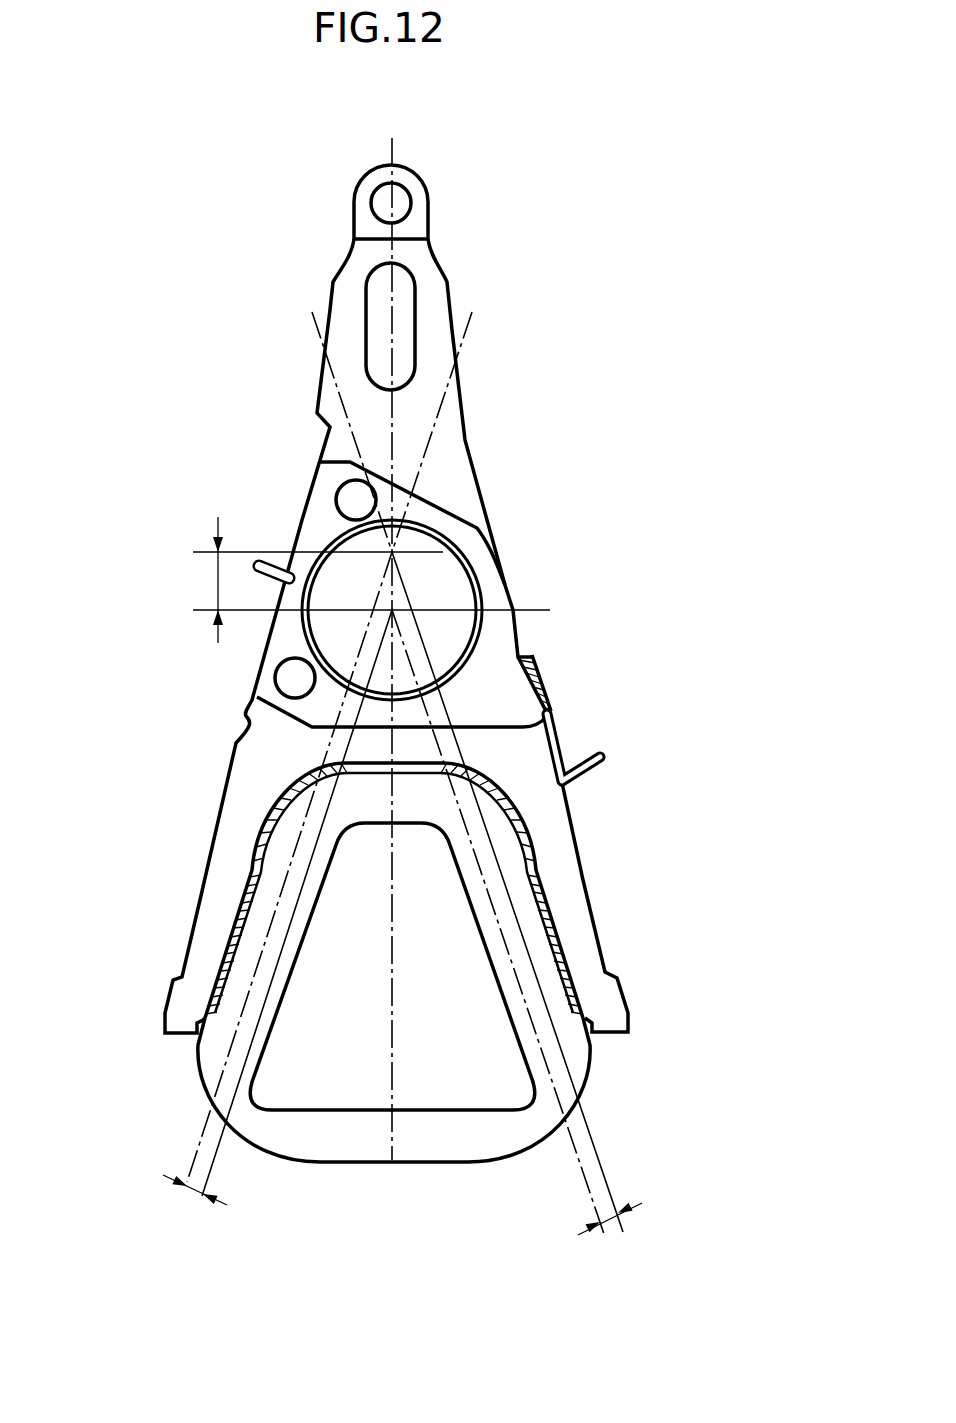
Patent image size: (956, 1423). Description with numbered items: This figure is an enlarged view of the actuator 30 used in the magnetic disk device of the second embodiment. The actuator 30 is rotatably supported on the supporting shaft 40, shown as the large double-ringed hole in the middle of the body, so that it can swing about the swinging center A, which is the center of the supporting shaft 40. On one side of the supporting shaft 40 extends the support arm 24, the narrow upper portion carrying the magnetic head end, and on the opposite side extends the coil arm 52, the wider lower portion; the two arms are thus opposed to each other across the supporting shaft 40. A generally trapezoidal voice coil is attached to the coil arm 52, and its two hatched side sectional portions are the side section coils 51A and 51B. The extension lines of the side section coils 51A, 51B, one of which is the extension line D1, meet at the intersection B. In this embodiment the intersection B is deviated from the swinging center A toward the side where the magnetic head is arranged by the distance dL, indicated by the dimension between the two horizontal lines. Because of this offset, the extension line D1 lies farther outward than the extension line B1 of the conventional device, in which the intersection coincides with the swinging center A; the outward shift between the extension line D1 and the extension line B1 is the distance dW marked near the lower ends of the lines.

The actuator 30 is at (408, 124).
The support arm 24 is at (450, 418).
The supporting shaft 40 is at (457, 628).
The coil arm 52 is at (567, 870).
The side section coil 51A is at (540, 943).
The side section coil 51B is at (245, 940).
The swinging center A is at (400, 606).
The intersection B is at (398, 549).
The extension line D1 is at (186, 1157).
The extension line B1 is at (232, 1120).
The distance dW is at (188, 1200).
The distance dL is at (365, 580).